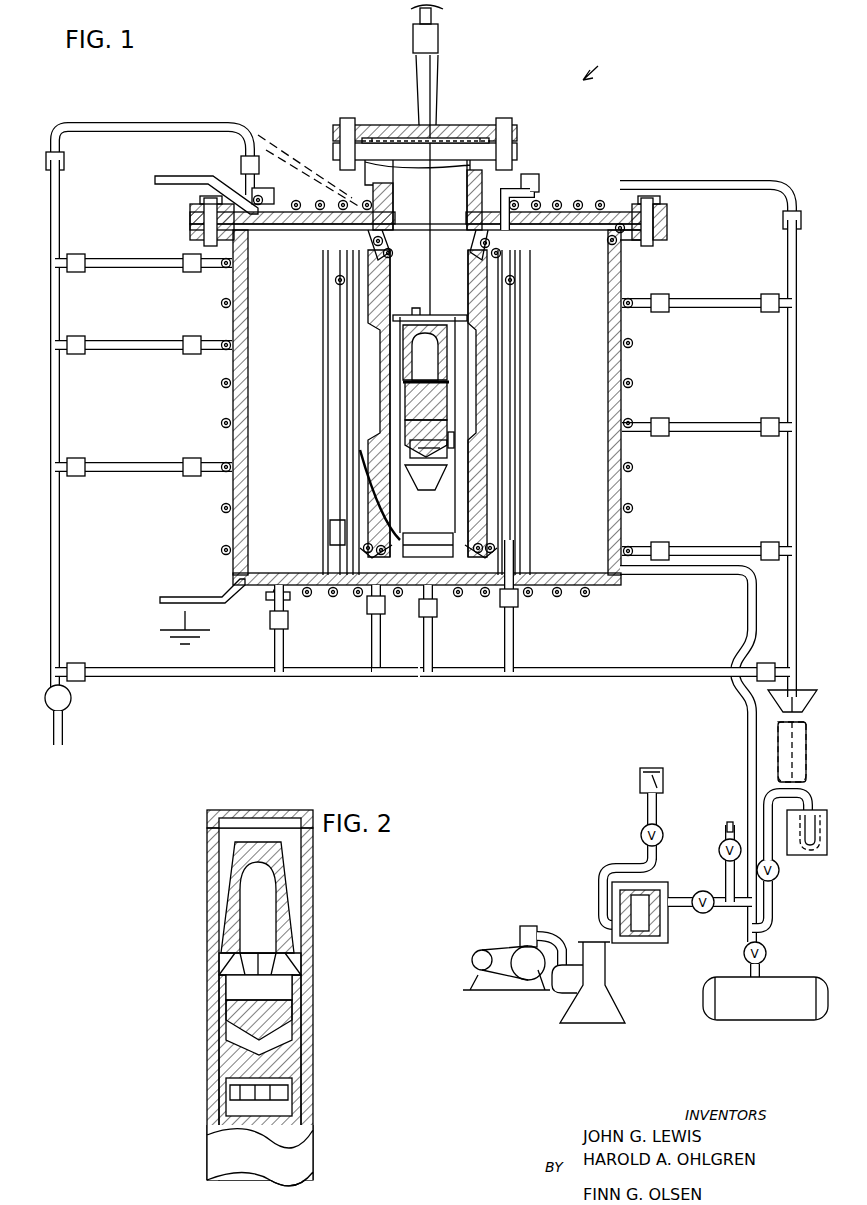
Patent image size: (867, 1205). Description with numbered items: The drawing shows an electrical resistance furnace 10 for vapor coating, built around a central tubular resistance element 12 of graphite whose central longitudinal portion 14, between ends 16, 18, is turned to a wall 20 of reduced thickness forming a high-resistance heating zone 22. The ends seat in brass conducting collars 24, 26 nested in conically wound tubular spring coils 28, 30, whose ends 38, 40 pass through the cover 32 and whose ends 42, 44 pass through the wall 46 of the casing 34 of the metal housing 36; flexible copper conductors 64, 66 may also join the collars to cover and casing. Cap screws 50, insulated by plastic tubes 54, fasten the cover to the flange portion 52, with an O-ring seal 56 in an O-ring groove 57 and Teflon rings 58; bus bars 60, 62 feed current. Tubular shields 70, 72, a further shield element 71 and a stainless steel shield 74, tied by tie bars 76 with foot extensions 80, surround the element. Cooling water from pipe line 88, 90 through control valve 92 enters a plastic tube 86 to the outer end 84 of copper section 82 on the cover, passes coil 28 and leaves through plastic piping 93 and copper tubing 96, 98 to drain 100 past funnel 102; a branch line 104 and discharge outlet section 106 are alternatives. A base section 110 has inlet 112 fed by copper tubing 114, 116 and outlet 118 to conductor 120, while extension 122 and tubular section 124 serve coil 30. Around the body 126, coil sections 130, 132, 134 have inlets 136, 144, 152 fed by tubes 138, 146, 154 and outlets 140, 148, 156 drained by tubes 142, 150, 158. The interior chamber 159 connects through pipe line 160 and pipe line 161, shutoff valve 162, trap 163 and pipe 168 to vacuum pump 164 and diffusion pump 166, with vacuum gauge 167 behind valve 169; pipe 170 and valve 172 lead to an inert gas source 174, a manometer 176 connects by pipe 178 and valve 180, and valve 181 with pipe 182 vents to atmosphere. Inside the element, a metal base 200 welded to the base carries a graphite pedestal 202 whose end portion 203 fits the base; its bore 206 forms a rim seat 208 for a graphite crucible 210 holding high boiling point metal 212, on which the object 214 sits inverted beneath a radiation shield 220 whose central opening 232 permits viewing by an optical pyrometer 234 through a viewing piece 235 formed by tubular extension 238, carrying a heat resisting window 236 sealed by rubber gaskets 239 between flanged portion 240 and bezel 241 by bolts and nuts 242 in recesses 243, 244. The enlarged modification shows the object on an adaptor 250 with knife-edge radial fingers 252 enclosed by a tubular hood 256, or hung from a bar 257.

In FIG. 1, the electrical resistance furnace 10 is at (605, 63).
In FIG. 1, the central tubular resistance element 12 is at (480, 465).
In FIG. 1, the central longitudinal portion 14 is at (325, 365).
In FIG. 1, the end of resistance element 16 is at (505, 270).
In FIG. 1, the end of resistance element 18 is at (488, 485).
In FIG. 1, the wall of reduced thickness 20 is at (496, 394).
In FIG. 1, the electrical resistance heating zone 22 is at (487, 405).
In FIG. 1, the metallic conducting collar 24 is at (388, 262).
In FIG. 1, the metallic conducting collar 26 is at (365, 460).
In FIG. 1, the conically spirally wound spring coil 28 is at (378, 250).
In FIG. 1, the conically spirally wound spring coil 30 is at (330, 530).
In FIG. 1, the cover 32 is at (628, 228).
In FIG. 1, the casing 34 is at (625, 280).
In FIG. 1, the metal housing 36 is at (632, 492).
In FIG. 1, the end of coil 38 is at (372, 235).
In FIG. 1, the end of coil 40 is at (500, 240).
In FIG. 1, the end of coil 42 is at (360, 550).
In FIG. 1, the end of coil 44 is at (498, 535).
In FIG. 1, the wall of casing 46 is at (608, 588).
In FIG. 1, the cap screws 50 is at (200, 205).
In FIG. 1, the flange portion 52 is at (655, 235).
In FIG. 1, the plastic tubes 54 is at (665, 222).
In FIG. 1, the O-ring seal 56 is at (612, 240).
In FIG. 1, the O-ring groove 57 is at (622, 232).
In FIG. 1, the Teflon rings 58 is at (195, 222).
In FIG. 1, the bus bar 60 is at (180, 180).
In FIG. 1, the bus bar 62 is at (200, 605).
In FIG. 1, the flexible copper conductor 64 is at (392, 262).
In FIG. 1, the flexible copper conductor 66 is at (462, 595).
In FIG. 1, the inner tubular shield 70 is at (518, 310).
In FIG. 1, the heating element tube 71 is at (343, 290).
In FIG. 1, the inner tubular shield 72 is at (523, 330).
In FIG. 1, the stainless steel tubular radiation shield 74 is at (532, 360).
In FIG. 1, the tie bars 76 is at (512, 290).
In FIG. 1, the foot extensions 80 is at (520, 565).
In FIG. 1, the spirally wound copper tube section 82 is at (594, 198).
In FIG. 1, the outer end of section 84 is at (300, 195).
In FIG. 1, the plastic tube 86 is at (148, 125).
In FIG. 1, the copper pipe line 88 is at (62, 595).
In FIG. 1, the copper pipe line 90 is at (66, 735).
In FIG. 1, the control valve 92 is at (65, 708).
In FIG. 1, the plastic piping 93 is at (740, 185).
In FIG. 1, the copper tubing 96 is at (790, 470).
In FIG. 1, the copper tubing 98 is at (805, 712).
In FIG. 1, the drain 100 is at (798, 780).
In FIG. 1, the funnel 102 is at (778, 672).
In FIG. 1, the branch line 104 is at (278, 150).
In FIG. 1, the discharge outlet section 106 is at (540, 175).
In FIG. 1, the heat exchange section 110 is at (337, 605).
In FIG. 1, the outer coil inlet 112 is at (268, 600).
In FIG. 1, the copper tubing 114 is at (272, 645).
In FIG. 1, the copper tubing 116 is at (165, 670).
In FIG. 1, the outlet 118 is at (433, 612).
In FIG. 1, the copper tube conductor 120 is at (462, 675).
In FIG. 1, the extension of inlet line 122 is at (342, 675).
In FIG. 1, the copper tubular section 124 is at (515, 632).
In FIG. 1, the body of housing 126 is at (625, 365).
In FIG. 1, the copper coil section 130 is at (219, 297).
In FIG. 1, the copper coil section 132 is at (217, 412).
In FIG. 1, the copper coil section 134 is at (219, 522).
In FIG. 1, the inlet 136 is at (210, 270).
In FIG. 1, the copper tube section 138 is at (128, 260).
In FIG. 1, the discharge end 140 is at (635, 300).
In FIG. 1, the copper section 142 is at (700, 306).
In FIG. 1, the inlet 144 is at (212, 352).
In FIG. 1, the copper tube 146 is at (105, 348).
In FIG. 1, the discharge outlet 148 is at (640, 420).
In FIG. 1, the copper connector tube 150 is at (718, 422).
In FIG. 1, the inlet 152 is at (210, 475).
In FIG. 1, the copper section 154 is at (110, 472).
In FIG. 1, the discharge outlet 156 is at (642, 548).
In FIG. 1, the copper conductor 158 is at (718, 548).
In FIG. 1, the interior chamber 159 is at (247, 440).
In FIG. 1, the pipe line 160 is at (652, 575).
In FIG. 1, the pipe line 161 is at (740, 905).
In FIG. 1, the shutoff valve 162 is at (705, 890).
In FIG. 1, the trap 163 is at (667, 942).
In FIG. 1, the vacuum pump 164 is at (530, 993).
In FIG. 1, the diffusion pump 166 is at (605, 1025).
In FIG. 1, the vacuum gauge 167 is at (640, 786).
In FIG. 1, the pipe 168 is at (605, 900).
In FIG. 1, the valve 169 is at (642, 838).
In FIG. 1, the pipe 170 is at (750, 928).
In FIG. 1, the valve 172 is at (768, 953).
In FIG. 1, the source of inert gas 174 is at (785, 1025).
In FIG. 1, the manometer 176 is at (812, 855).
In FIG. 1, the pipe 178 is at (768, 800).
In FIG. 1, the valve 180 is at (777, 880).
In FIG. 1, the valve 181 is at (727, 832).
In FIG. 1, the pipe 182 is at (722, 852).
In FIG. 1, the metal base 200 is at (410, 580).
In FIG. 1, the graphite pedestal 202 is at (441, 502).
In FIG. 2, the graphite pedestal 202 is at (225, 1160).
In FIG. 1, the end portion of reduced section 203 is at (412, 537).
In FIG. 1, the bore 206 is at (450, 450).
In FIG. 2, the bore 206 is at (230, 1088).
In FIG. 1, the rim seat 208 is at (455, 437).
In FIG. 1, the graphite crucible 210 is at (415, 432).
In FIG. 2, the graphite crucible 210 is at (222, 1040).
In FIG. 1, the high boiling point metal 212 is at (412, 400).
In FIG. 2, the high boiling point metal 212 is at (250, 1015).
In FIG. 1, the object 214 is at (405, 355).
In FIG. 2, the object 214 is at (233, 877).
In FIG. 1, the radiation shield 220 is at (415, 308).
In FIG. 1, the central opening 232 is at (432, 315).
In FIG. 1, the optical pyrometer 234 is at (440, 36).
In FIG. 1, the viewing piece 235 is at (395, 125).
In FIG. 1, the heat resisting window 236 is at (436, 125).
In FIG. 1, the elongated tubular extension 238 is at (455, 205).
In FIG. 1, the rubber gaskets 239 is at (500, 135).
In FIG. 1, the flanged portion 240 is at (517, 152).
In FIG. 1, the bezel 241 is at (495, 140).
In FIG. 1, the bolts and nuts 242 is at (505, 118).
In FIG. 1, the recess 243 is at (348, 118).
In FIG. 1, the recess 244 is at (385, 195).
In FIG. 2, the adaptor 250 is at (216, 965).
In FIG. 2, the knife-edge radial fingers 252 is at (262, 960).
In FIG. 2, the tubular hood 256 is at (207, 850).
In FIG. 2, the bar 257 is at (210, 825).